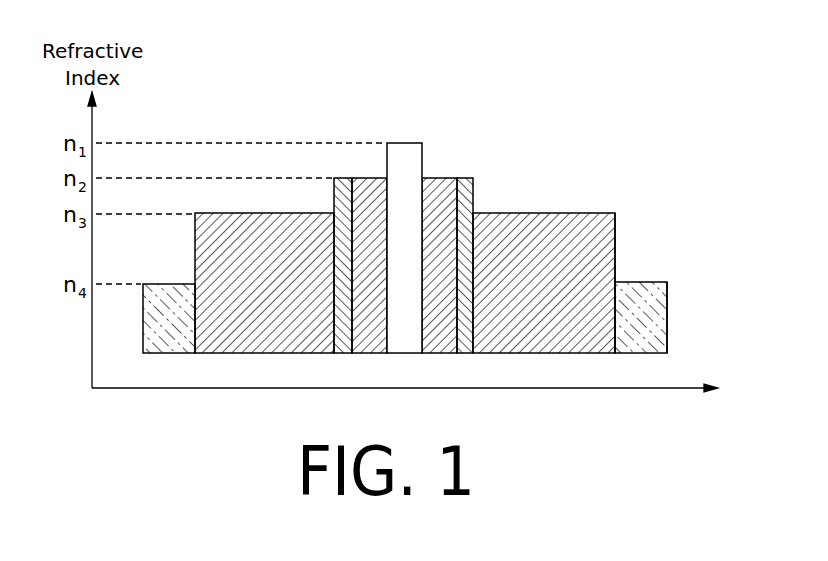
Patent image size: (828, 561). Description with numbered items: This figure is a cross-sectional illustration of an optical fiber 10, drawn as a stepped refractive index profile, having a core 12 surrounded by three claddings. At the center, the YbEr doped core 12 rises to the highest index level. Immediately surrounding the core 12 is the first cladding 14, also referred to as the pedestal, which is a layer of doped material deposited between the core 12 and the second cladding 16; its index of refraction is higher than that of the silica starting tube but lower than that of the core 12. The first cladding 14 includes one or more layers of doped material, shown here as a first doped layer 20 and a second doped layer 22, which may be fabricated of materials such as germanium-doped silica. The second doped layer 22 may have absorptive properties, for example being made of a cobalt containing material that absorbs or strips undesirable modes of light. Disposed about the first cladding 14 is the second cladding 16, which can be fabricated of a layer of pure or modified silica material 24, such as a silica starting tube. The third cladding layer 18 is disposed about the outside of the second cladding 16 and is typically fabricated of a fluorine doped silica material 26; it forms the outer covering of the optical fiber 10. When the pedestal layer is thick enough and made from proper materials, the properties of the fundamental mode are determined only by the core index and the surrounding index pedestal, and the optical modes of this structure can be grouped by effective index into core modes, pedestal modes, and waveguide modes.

The optical fiber 10 is at (552, 122).
The core 12 is at (403, 143).
The first cladding 14 is at (423, 158).
The second cladding 16 is at (562, 200).
The third cladding layer 18 is at (655, 268).
The first doped layer 20 is at (442, 354).
The second doped layer 22 is at (463, 354).
The pure or modified silica material 24 is at (615, 242).
The fluorine doped silica material 26 is at (666, 328).